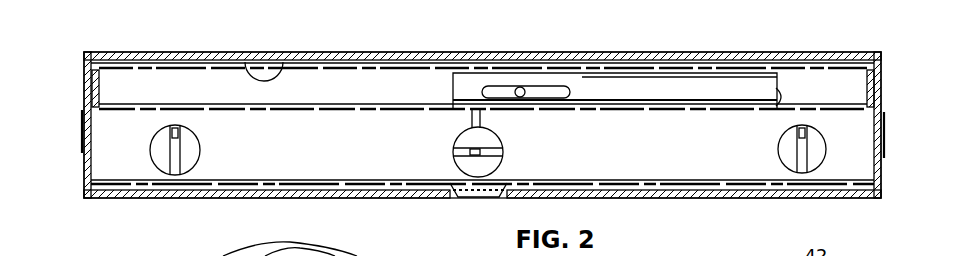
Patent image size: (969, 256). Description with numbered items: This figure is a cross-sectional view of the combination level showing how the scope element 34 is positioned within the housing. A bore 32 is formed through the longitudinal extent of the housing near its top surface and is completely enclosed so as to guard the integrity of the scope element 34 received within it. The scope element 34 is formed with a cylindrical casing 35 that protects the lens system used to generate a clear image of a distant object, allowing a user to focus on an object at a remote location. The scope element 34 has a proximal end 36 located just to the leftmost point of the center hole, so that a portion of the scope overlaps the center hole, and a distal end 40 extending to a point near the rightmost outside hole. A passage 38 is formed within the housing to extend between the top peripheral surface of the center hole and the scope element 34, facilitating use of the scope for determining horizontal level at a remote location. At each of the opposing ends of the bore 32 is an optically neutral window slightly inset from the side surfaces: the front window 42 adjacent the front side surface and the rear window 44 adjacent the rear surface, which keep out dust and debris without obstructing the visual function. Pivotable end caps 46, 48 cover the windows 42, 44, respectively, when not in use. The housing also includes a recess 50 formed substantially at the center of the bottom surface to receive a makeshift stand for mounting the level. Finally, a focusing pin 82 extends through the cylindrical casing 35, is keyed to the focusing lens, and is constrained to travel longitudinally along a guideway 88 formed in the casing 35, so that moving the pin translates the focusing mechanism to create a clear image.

The bore 32 is at (244, 63).
The scope element 34 is at (572, 66).
The cylindrical casing 35 is at (699, 92).
The proximal end 36 is at (453, 88).
The passage 38 is at (484, 121).
The distal end 40 is at (779, 101).
The front window 42 is at (884, 66).
The rear window 44 is at (92, 80).
The pivotable end cap 46 is at (887, 140).
The pivotable end cap 48 is at (80, 132).
The recess 50 is at (470, 206).
The focusing pin 82 is at (518, 88).
The guideway 88 is at (569, 99).